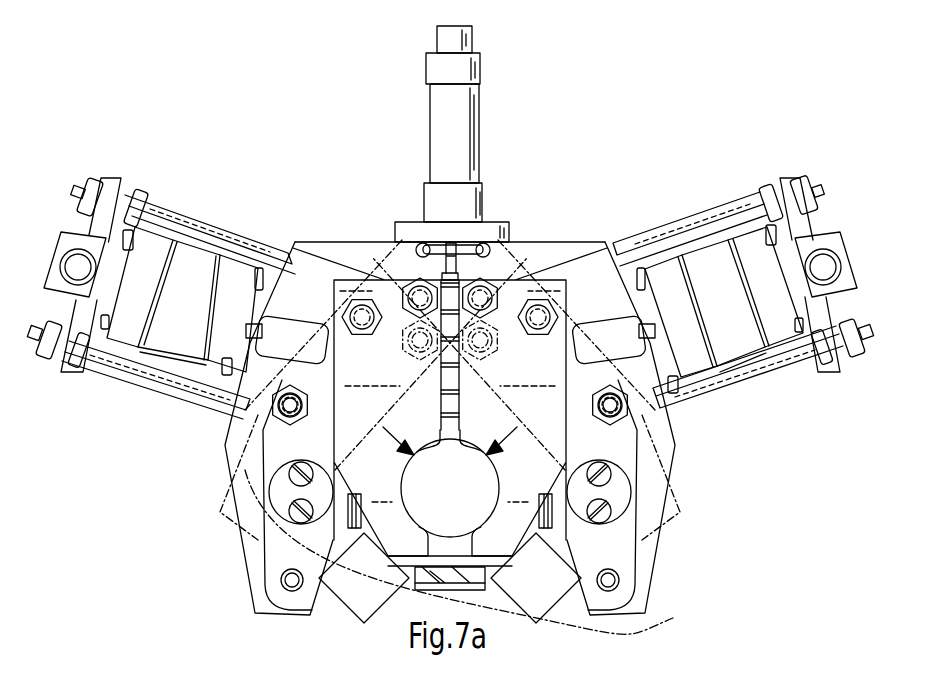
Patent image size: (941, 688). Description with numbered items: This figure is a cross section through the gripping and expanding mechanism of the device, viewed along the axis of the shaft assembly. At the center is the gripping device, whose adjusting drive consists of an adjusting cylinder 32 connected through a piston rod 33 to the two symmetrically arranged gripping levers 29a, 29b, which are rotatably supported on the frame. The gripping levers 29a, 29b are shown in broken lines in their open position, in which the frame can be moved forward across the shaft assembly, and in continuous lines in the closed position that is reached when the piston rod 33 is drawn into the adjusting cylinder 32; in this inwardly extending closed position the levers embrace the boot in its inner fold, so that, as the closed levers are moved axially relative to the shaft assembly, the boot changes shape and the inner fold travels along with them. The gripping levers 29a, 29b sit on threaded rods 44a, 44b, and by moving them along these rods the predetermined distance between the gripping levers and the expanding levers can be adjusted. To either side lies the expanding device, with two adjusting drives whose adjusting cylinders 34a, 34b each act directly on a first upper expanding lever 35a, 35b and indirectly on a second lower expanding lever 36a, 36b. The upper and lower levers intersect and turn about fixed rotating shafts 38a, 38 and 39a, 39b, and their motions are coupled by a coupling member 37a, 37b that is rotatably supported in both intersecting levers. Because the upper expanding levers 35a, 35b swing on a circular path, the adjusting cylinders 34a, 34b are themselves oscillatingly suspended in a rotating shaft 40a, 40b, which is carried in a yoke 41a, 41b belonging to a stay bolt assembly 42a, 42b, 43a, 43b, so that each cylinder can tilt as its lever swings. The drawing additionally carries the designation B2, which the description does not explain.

The gripping lever 29a is at (358, 403).
The gripping lever 29b is at (493, 417).
The adjusting cylinder 32 is at (468, 207).
The piston rod 33 is at (500, 268).
The adjusting cylinder 34a is at (188, 277).
The adjusting cylinder 34b is at (778, 182).
The first upper expanding lever 35a is at (320, 440).
The first upper expanding lever 35b is at (573, 440).
The second lower expanding lever 36a is at (318, 598).
The second lower expanding lever 36b is at (643, 598).
The coupling member 37a is at (269, 490).
The coupling member 37b is at (631, 490).
The fixed rotating shaft 38 is at (868, 334).
The fixed rotating shaft 38a is at (275, 408).
The fixed rotating shaft 39a is at (281, 580).
The fixed rotating shaft 39b is at (619, 578).
The rotating shaft 40a is at (80, 262).
The rotating shaft 40b is at (828, 262).
The yoke 41a is at (117, 197).
The yoke 41b is at (805, 223).
The stay bolt assembly 42a is at (167, 215).
The stay bolt assembly 42b is at (743, 215).
The stay bolt assembly 43a is at (263, 323).
The stay bolt assembly 43b is at (640, 323).
The threaded rod 44a is at (420, 296).
The threaded rod 44b is at (540, 312).
The swing path B2 is at (673, 618).